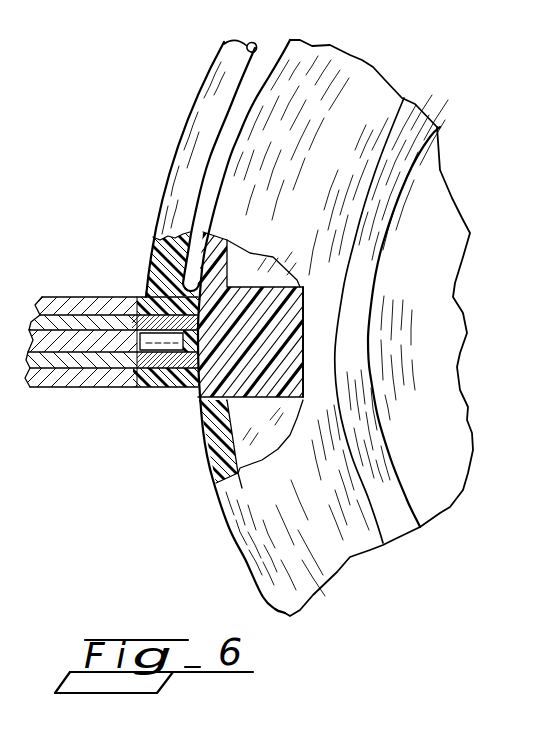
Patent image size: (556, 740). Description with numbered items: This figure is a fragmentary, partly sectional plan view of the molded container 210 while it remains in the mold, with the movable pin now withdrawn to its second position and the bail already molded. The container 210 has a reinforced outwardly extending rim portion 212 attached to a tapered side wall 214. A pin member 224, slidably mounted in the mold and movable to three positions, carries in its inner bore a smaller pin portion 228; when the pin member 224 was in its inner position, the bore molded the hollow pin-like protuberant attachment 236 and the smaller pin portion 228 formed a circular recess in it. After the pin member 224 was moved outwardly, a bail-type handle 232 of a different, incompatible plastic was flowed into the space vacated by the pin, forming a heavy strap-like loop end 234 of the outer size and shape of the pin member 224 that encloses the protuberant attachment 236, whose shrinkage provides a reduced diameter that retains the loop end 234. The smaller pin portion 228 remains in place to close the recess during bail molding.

The molded container 210 is at (476, 194).
The rim portion 212 is at (344, 60).
The tapered side wall 214 is at (382, 80).
The pin member 224 is at (127, 360).
The smaller pin portion 228 is at (107, 340).
The bail-type handle 232 is at (183, 157).
The strap-like loop end 234 is at (187, 380).
The pin-like protuberant attachment 236 is at (173, 388).